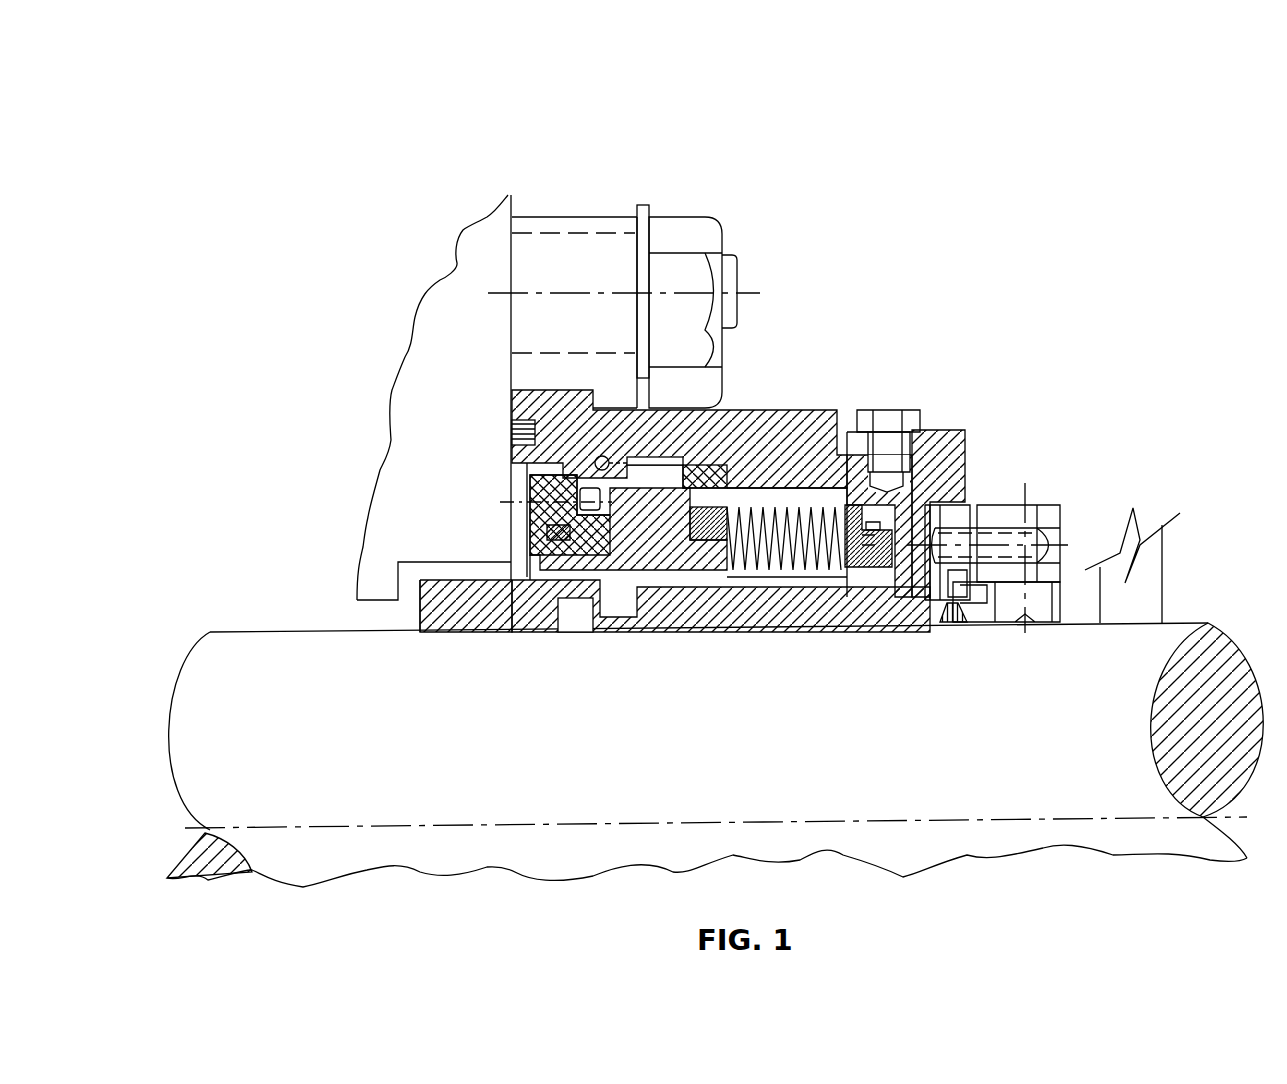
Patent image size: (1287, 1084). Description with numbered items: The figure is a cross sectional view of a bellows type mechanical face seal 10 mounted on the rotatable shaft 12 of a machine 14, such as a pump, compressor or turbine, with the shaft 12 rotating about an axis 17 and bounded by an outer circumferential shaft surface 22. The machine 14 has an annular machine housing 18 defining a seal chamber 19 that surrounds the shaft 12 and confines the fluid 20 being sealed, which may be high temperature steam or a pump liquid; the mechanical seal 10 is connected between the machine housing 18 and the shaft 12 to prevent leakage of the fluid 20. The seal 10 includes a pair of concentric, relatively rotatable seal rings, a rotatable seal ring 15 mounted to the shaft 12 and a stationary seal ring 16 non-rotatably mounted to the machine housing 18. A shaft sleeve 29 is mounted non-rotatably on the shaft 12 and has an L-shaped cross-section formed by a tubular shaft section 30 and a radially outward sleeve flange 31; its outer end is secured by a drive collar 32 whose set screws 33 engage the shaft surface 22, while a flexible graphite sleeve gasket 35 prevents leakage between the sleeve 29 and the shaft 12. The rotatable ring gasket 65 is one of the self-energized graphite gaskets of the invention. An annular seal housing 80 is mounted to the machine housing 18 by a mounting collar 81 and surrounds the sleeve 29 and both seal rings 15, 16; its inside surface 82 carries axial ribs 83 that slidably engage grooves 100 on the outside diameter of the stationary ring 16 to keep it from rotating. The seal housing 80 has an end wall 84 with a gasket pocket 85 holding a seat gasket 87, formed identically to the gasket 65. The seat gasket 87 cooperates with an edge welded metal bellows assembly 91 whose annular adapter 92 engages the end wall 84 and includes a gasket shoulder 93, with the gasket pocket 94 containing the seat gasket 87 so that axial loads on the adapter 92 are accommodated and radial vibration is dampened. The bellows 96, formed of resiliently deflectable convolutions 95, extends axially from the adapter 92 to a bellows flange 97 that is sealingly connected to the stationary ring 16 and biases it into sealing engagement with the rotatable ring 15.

The bellows type mechanical face seal 10 is at (1190, 400).
The rotatable shaft 12 is at (1113, 838).
The machine 14 is at (373, 232).
The rotatable seal ring 15 is at (577, 567).
The stationary seal ring 16 is at (703, 562).
The axis 17 is at (355, 815).
The annular machine housing 18 is at (497, 210).
The seal chamber 19 is at (348, 619).
The fluid 20 is at (842, 458).
The outer circumferential shaft surface 22 is at (240, 632).
The shaft sleeve 29 is at (672, 638).
The tubular shaft section 30 is at (826, 608).
The sleeve flange 31 is at (492, 612).
The drive collar 32 is at (1070, 500).
The set screws 33 is at (1070, 596).
The sleeve gasket 35 is at (1045, 598).
The rotatable ring gasket 65 is at (542, 528).
The seal housing 80 is at (817, 493).
The mounting collar 81 is at (592, 225).
The inside surface 82 is at (789, 568).
The axial ribs 83 is at (736, 263).
The end wall 84 is at (940, 482).
The gasket pocket 85 is at (905, 525).
The seat gasket 87 is at (880, 510).
The edge welded metal bellows assembly 91 is at (862, 567).
The annular adapter 92 is at (877, 567).
The annular gasket shoulder 93 is at (923, 600).
The gasket pocket 94 is at (900, 542).
The convolutions 95 is at (768, 574).
The bellows 96 is at (830, 574).
The bellows flange 97 is at (700, 500).
The grooves 100 is at (652, 478).